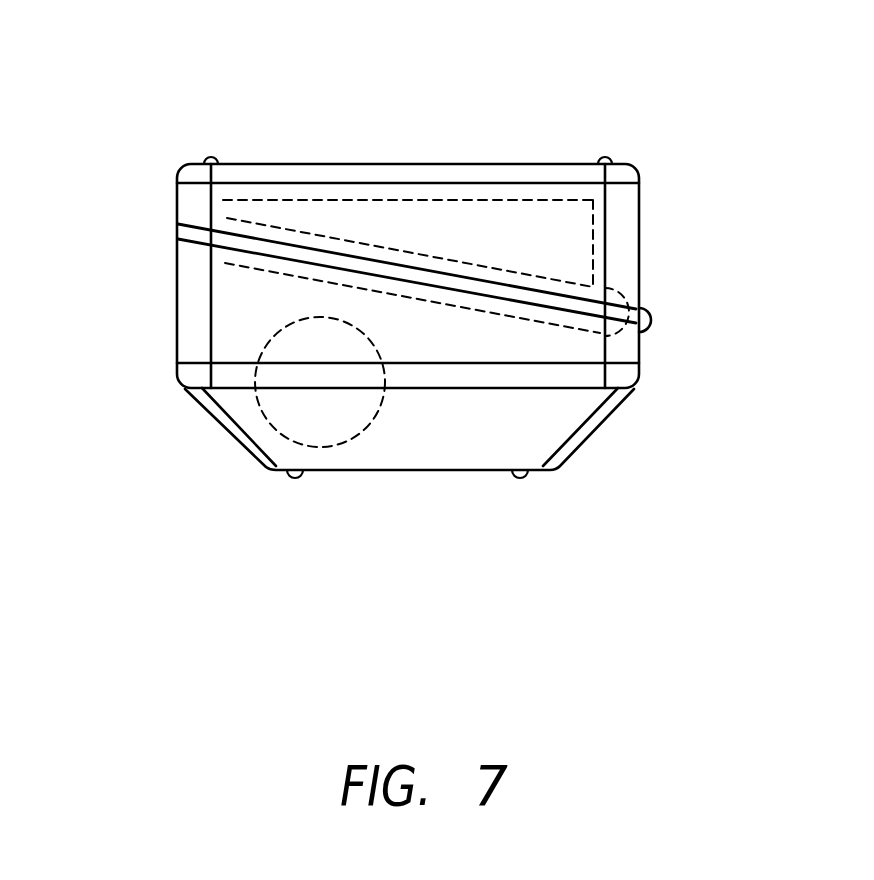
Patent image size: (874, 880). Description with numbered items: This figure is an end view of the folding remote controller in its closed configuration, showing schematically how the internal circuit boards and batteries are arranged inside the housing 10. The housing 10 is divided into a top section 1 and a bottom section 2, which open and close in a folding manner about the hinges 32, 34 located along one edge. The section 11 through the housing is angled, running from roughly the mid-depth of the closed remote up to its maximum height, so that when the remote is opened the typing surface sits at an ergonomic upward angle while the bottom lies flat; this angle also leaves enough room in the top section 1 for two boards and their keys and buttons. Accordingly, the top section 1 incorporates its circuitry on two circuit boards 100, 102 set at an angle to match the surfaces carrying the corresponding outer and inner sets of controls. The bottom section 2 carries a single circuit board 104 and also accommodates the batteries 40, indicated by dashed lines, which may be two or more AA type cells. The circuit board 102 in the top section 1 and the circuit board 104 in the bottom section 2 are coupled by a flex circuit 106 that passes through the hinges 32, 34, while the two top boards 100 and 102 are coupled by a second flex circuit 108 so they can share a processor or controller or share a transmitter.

The top section 1 is at (177, 196).
The bottom section 2 is at (177, 298).
The housing 10 is at (177, 340).
The section 11 is at (463, 278).
The hinge 32 is at (652, 320).
The hinge 34 is at (758, 310).
The batteries 40 is at (335, 447).
The circuit board 100 is at (422, 200).
The circuit board 102 is at (320, 235).
The circuit board 104 is at (442, 303).
The flex circuit 106 is at (612, 335).
The second flex circuit 108 is at (593, 243).